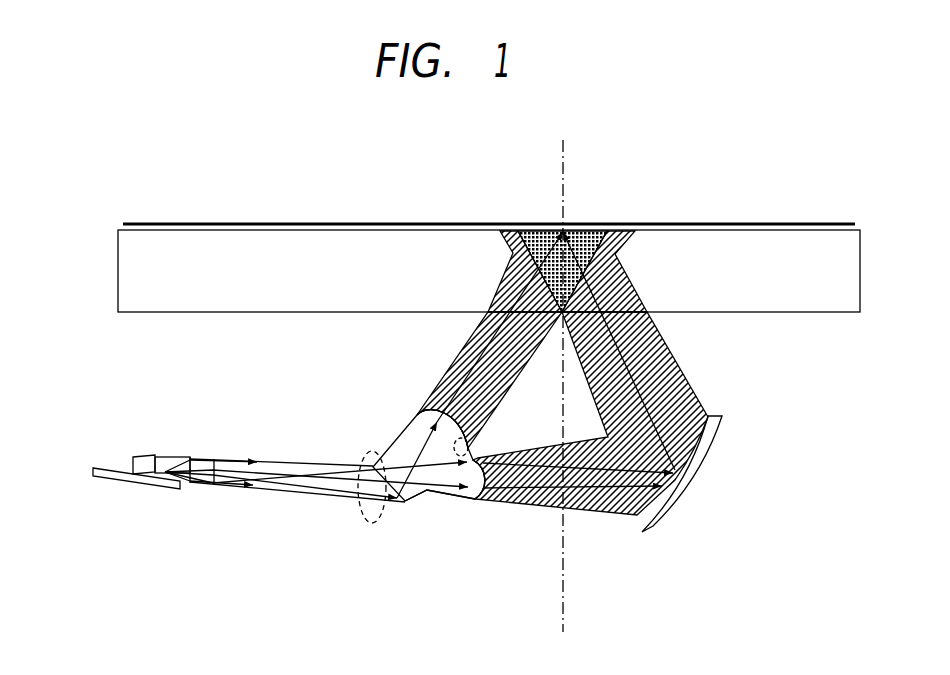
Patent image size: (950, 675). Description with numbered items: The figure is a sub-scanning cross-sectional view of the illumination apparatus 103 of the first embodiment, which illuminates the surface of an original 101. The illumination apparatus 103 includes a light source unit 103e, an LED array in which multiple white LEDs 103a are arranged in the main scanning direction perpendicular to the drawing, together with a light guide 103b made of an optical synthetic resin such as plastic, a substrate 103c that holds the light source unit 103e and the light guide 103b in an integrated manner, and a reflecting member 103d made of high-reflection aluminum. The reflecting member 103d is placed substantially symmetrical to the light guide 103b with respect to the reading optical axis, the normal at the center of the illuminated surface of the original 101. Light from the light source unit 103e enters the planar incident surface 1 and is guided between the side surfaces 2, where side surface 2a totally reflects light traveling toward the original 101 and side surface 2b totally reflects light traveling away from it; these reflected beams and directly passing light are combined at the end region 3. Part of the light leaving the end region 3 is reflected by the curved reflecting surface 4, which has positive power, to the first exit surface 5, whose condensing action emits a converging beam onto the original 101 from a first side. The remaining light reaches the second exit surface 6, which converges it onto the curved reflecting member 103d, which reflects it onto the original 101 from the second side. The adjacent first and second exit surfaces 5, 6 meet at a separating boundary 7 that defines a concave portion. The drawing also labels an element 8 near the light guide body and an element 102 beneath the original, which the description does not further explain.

The incident surface 1 is at (162, 473).
The side surface 2 is at (167, 414).
The side surface 2a is at (218, 458).
The side surface 2b is at (190, 458).
The end region 3 is at (357, 452).
The reflecting surface 4 is at (421, 504).
The first exit surface 5 is at (425, 410).
The second exit surface 6 is at (490, 500).
The separating boundary 7 is at (470, 448).
The prism 8 is at (395, 433).
The original 101 is at (566, 222).
The transparent plate 102 is at (703, 240).
The illumination apparatus 103 is at (765, 595).
The white LED 103a is at (132, 458).
The light guide 103b is at (270, 458).
The substrate 103c is at (117, 484).
The reflecting member 103d is at (714, 416).
The light source unit 103e is at (112, 477).